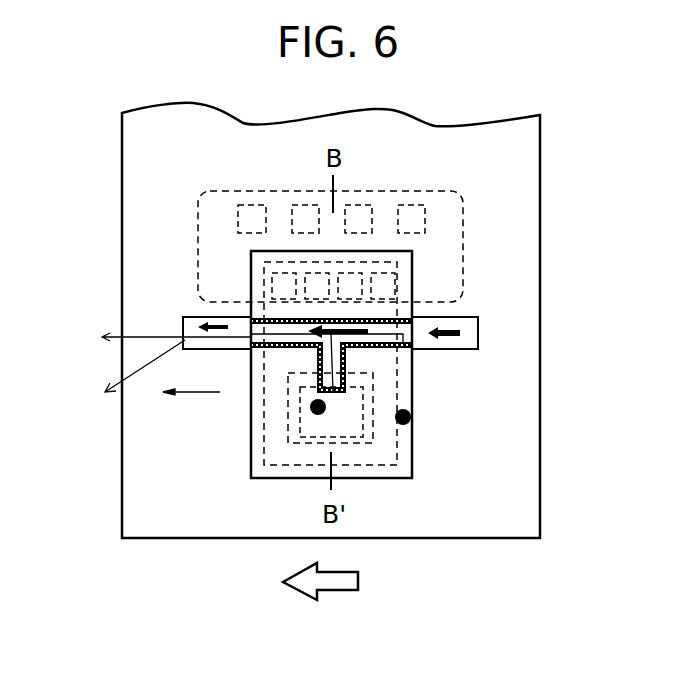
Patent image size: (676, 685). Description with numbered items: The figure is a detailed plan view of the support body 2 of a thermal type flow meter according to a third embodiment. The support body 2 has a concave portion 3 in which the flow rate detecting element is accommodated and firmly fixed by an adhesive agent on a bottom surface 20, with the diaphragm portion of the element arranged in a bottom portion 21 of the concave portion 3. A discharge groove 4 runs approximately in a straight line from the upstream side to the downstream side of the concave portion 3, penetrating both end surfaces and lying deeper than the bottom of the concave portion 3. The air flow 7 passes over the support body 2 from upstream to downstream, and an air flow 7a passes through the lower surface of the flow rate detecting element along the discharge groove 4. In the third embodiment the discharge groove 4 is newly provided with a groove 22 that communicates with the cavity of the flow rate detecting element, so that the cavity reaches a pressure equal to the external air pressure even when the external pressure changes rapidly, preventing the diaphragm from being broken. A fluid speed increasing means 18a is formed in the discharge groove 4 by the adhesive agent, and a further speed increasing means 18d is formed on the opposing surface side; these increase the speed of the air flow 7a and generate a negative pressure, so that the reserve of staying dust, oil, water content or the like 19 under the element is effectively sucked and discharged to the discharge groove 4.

The support body 2 is at (135, 490).
The concave portion 3 is at (250, 412).
The discharge groove 4 is at (183, 317).
The air flow 7 is at (342, 580).
The air flow 7a is at (452, 338).
The fluid speed increasing means 18a is at (278, 282).
The speed increasing means 18d is at (412, 352).
The reserve of dust, oil, water content or the like 19 is at (320, 412).
The bottom surface 20 is at (388, 280).
The bottom portion 21 is at (310, 433).
The groove 22 is at (318, 360).